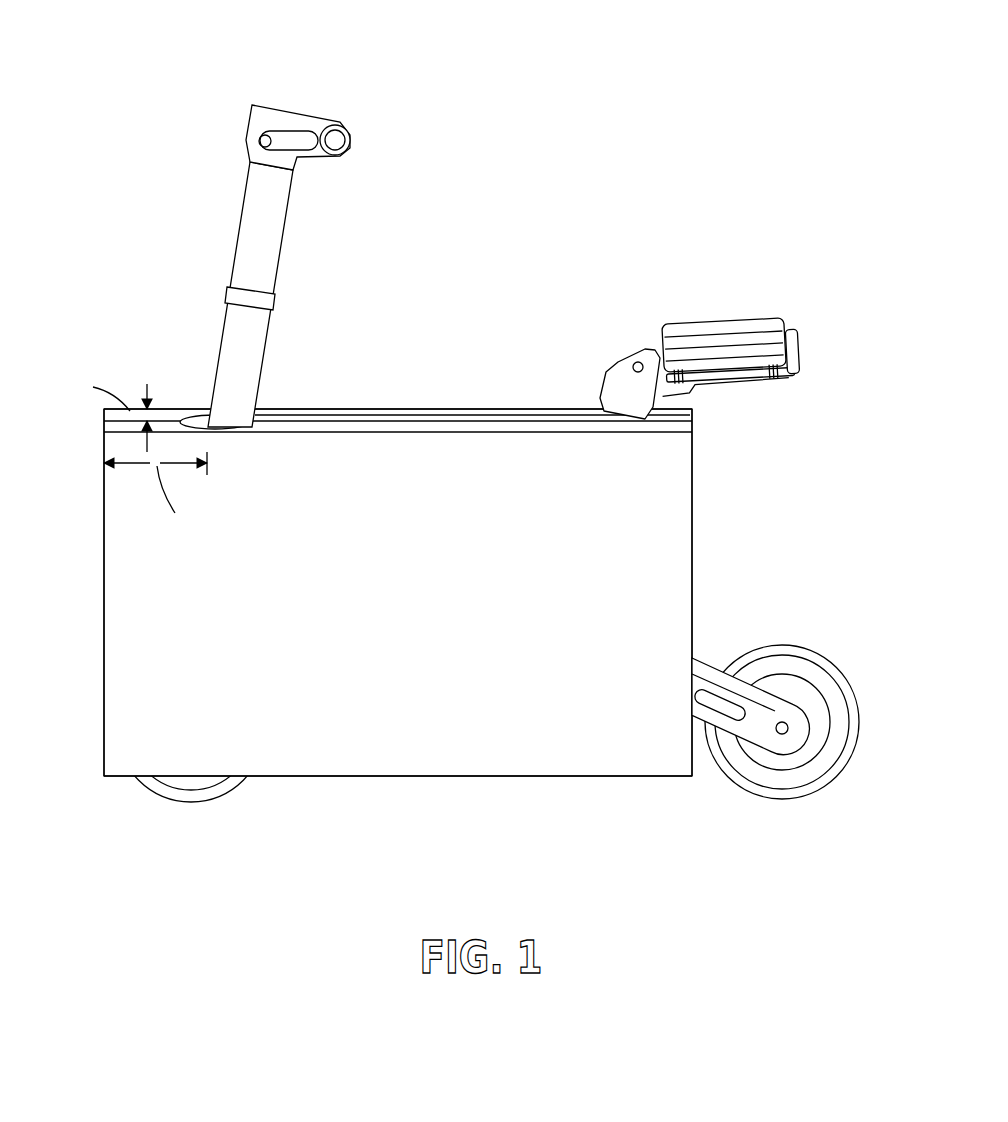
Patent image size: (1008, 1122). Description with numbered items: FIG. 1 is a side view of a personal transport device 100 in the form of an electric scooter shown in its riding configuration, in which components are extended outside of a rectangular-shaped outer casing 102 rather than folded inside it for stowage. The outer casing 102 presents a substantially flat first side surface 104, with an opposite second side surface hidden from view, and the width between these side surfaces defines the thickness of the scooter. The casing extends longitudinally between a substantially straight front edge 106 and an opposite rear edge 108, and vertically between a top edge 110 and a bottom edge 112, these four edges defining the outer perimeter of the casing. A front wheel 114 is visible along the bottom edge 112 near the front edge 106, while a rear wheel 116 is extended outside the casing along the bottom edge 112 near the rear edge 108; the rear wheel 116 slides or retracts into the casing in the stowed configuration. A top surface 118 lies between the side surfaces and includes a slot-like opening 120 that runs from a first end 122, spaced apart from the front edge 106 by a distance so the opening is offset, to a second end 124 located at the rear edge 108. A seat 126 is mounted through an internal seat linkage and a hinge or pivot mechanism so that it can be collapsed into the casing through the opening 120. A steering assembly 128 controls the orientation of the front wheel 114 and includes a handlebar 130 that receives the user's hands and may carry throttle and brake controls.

The personal transport device 100 is at (578, 226).
The outer casing 102 is at (668, 590).
The first side surface 104 is at (386, 605).
The front edge 106 is at (104, 610).
The rear edge 108 is at (692, 563).
The top edge 110 is at (397, 409).
The bottom edge 112 is at (452, 777).
The front wheel 114 is at (193, 803).
The rear wheel 116 is at (783, 799).
The top surface 118 is at (476, 406).
The opening 120 is at (347, 415).
The first end 122 is at (197, 415).
The second end 124 is at (700, 421).
The seat 126 is at (718, 303).
The steering assembly 128 is at (268, 120).
The handlebar 130 is at (307, 141).